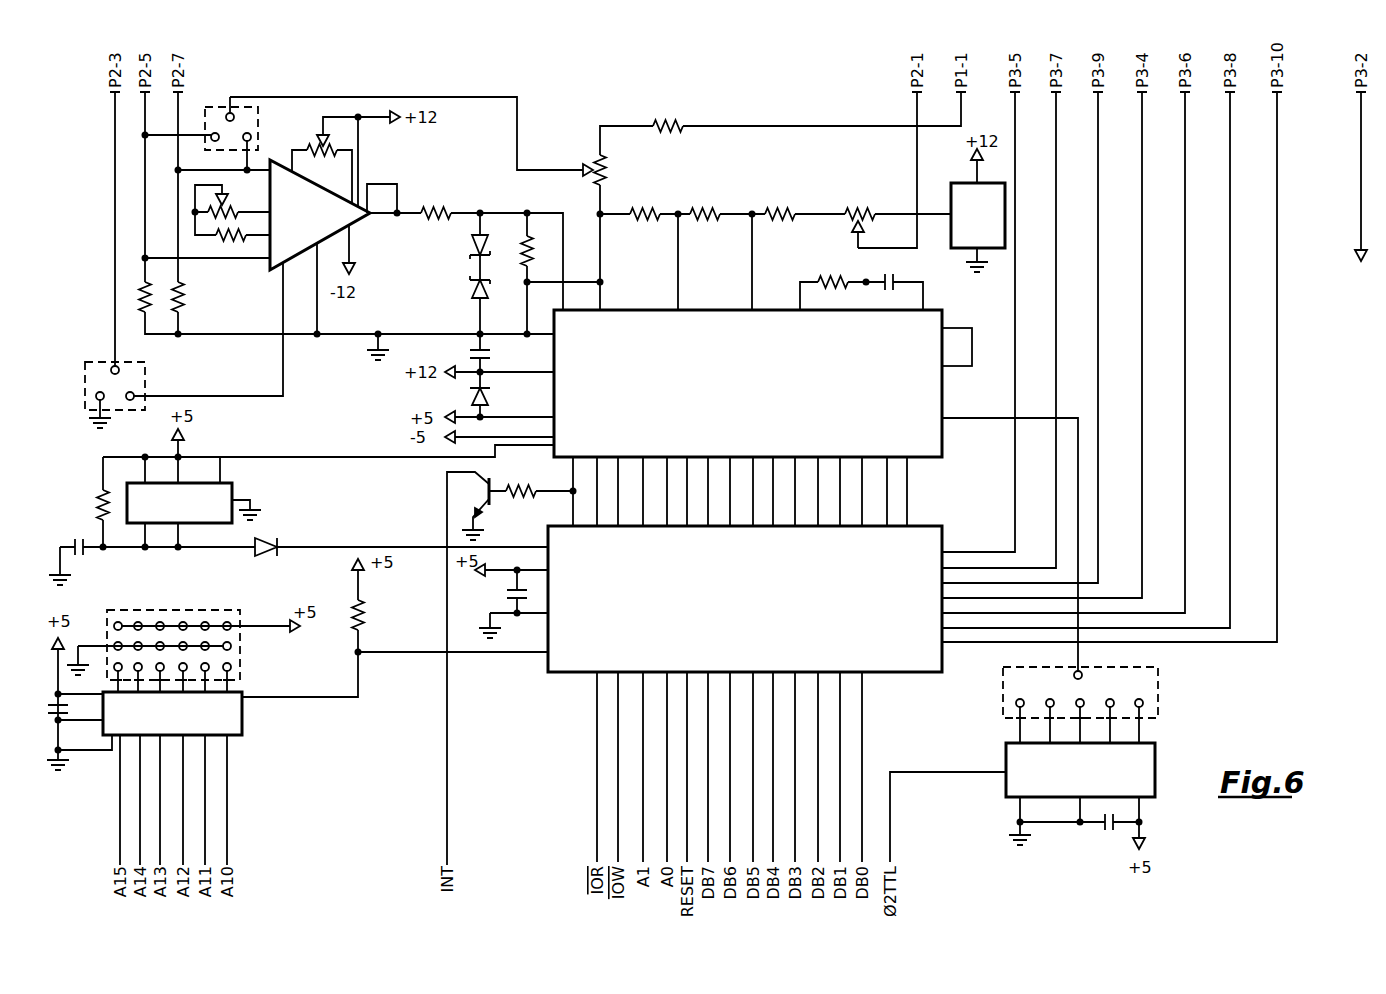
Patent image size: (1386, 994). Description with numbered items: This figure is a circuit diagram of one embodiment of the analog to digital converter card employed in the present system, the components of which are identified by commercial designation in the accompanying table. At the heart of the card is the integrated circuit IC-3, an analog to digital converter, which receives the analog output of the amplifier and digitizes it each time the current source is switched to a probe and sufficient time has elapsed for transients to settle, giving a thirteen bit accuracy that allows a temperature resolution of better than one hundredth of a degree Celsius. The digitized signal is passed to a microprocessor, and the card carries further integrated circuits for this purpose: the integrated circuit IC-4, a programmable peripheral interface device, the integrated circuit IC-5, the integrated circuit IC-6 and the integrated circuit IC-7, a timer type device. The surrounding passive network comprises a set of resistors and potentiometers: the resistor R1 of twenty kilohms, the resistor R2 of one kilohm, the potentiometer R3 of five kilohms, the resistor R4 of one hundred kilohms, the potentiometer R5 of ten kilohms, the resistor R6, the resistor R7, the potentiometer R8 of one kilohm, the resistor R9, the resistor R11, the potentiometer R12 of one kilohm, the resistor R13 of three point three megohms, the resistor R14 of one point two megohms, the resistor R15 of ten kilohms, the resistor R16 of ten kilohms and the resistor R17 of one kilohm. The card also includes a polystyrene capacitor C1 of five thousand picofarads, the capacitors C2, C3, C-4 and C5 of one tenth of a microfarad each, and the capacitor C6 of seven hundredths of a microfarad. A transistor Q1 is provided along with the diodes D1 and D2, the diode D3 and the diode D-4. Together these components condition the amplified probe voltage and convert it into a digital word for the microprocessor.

The resistor R1 is at (134, 310).
The resistor R2 is at (192, 302).
The potentiometer R3 is at (227, 204).
The resistor R4 is at (220, 243).
The potentiometer R5 is at (322, 163).
The resistor R6 is at (436, 204).
The resistor R7 is at (536, 260).
The potentiometer R8 is at (860, 205).
The resistor R9 is at (781, 205).
The resistor R11 is at (644, 205).
The potentiometer R12 is at (618, 170).
The resistor R13 is at (831, 270).
The resistor R14 is at (84, 505).
The resistor R15 is at (520, 503).
The resistor R16 is at (693, 159).
The resistor R17 is at (377, 615).
The capacitor C1 is at (904, 275).
The capacitor C2 is at (500, 595).
The capacitor C3 is at (70, 712).
The capacitor C-4 is at (494, 357).
The capacitor C5 is at (1108, 835).
The capacitor C6 is at (82, 556).
The diode D1 is at (463, 247).
The diode D2 is at (463, 289).
The diode D3 is at (263, 561).
The diode D-4 is at (496, 400).
The transistor Q1 is at (472, 497).
The integrated circuit IC-3 is at (763, 383).
The integrated circuit IC-4 is at (745, 599).
The integrated circuit IC-5 is at (172, 713).
The integrated circuit IC-6 is at (1080, 770).
The integrated circuit IC-7 is at (248, 341).